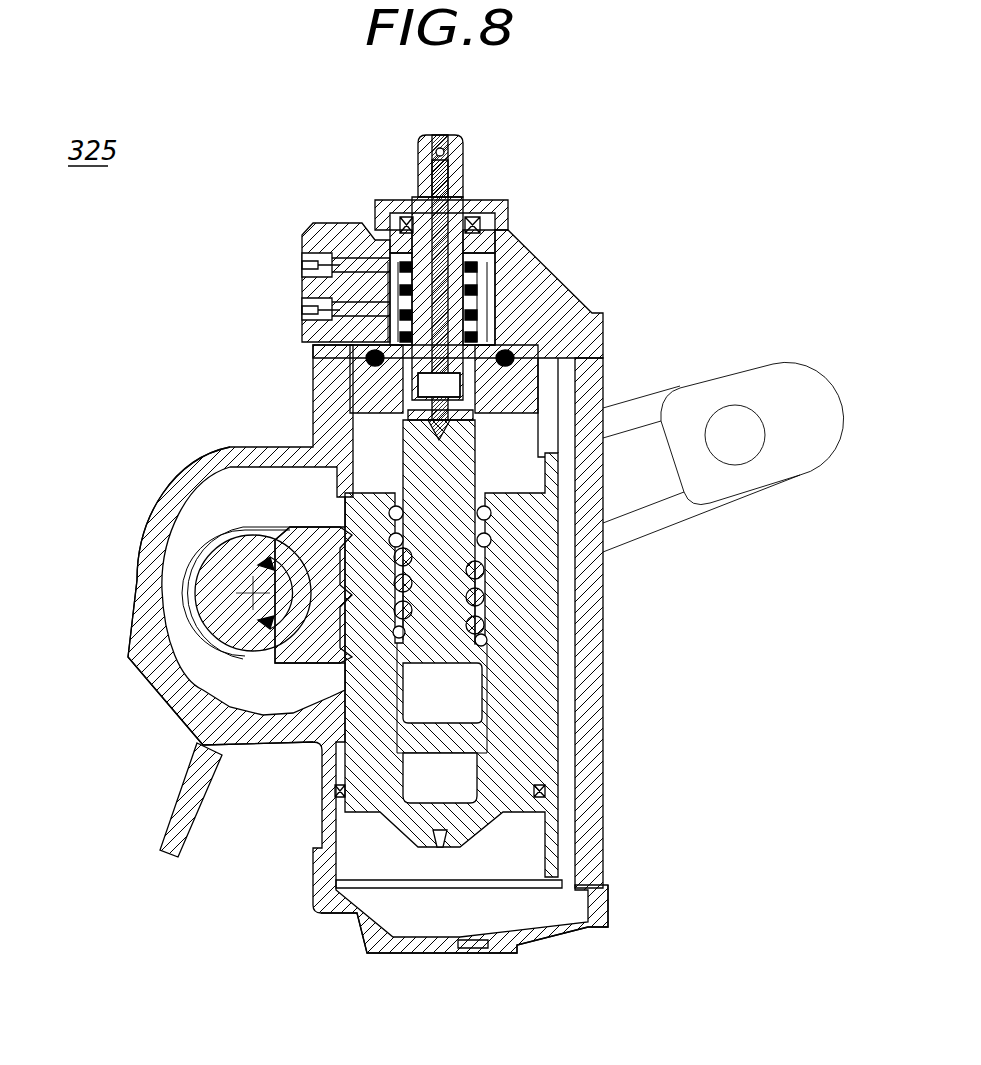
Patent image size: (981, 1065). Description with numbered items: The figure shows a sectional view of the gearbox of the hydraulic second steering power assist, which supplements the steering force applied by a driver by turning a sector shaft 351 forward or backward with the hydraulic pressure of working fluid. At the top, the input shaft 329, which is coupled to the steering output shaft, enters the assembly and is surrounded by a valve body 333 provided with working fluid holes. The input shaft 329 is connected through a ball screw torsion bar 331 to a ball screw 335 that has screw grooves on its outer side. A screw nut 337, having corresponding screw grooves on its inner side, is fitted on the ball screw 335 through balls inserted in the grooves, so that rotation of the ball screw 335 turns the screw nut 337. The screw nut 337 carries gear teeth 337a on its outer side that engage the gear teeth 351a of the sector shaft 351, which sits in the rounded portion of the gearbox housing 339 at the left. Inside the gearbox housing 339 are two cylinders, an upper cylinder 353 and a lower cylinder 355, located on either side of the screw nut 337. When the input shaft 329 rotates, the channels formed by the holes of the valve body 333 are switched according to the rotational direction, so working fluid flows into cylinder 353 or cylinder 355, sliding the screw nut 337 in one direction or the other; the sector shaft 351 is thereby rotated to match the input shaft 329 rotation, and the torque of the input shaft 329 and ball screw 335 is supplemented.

The input shaft 329 is at (463, 152).
The ball screw torsion bar 331 is at (430, 190).
The valve body 333 is at (485, 323).
The ball screw 335 is at (475, 455).
The screw nut 337 is at (508, 567).
The gear teeth 337a is at (338, 565).
The gearbox housing 339 is at (270, 453).
The sector shaft 351 is at (168, 662).
The gear teeth 351a is at (267, 523).
The cylinder 353 is at (362, 432).
The cylinder 355 is at (372, 850).